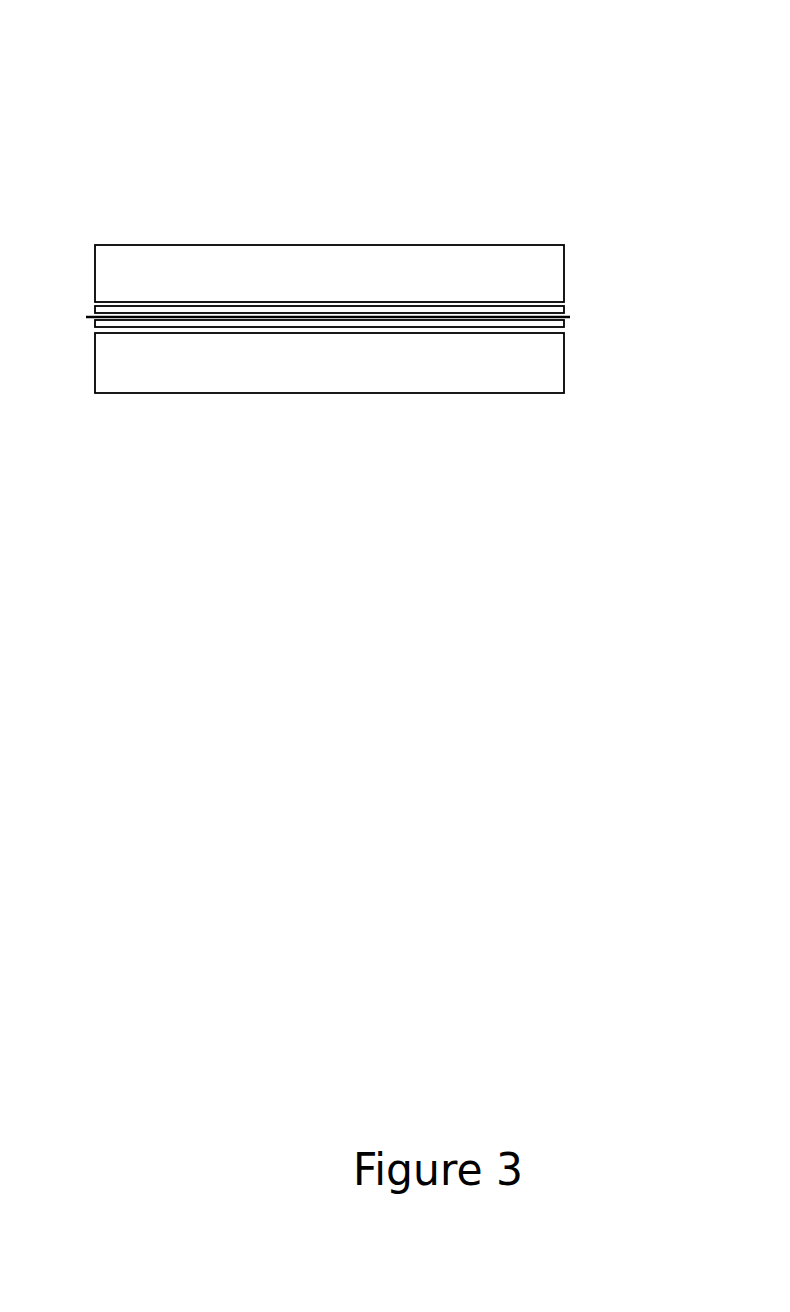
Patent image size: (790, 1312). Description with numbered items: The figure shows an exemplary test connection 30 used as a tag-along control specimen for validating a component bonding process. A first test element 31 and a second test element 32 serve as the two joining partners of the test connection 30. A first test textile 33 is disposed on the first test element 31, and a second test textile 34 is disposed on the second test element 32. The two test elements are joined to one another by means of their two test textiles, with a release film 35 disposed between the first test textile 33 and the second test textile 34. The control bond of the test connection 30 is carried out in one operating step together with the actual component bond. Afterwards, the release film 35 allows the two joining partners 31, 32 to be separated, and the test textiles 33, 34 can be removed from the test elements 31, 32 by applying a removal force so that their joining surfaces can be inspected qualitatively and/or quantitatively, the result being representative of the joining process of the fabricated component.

The test connection 30 is at (245, 148).
The first test element 31 is at (517, 400).
The second test element 32 is at (507, 238).
The first test textile 33 is at (568, 327).
The second test textile 34 is at (567, 310).
The release film 35 is at (87, 312).